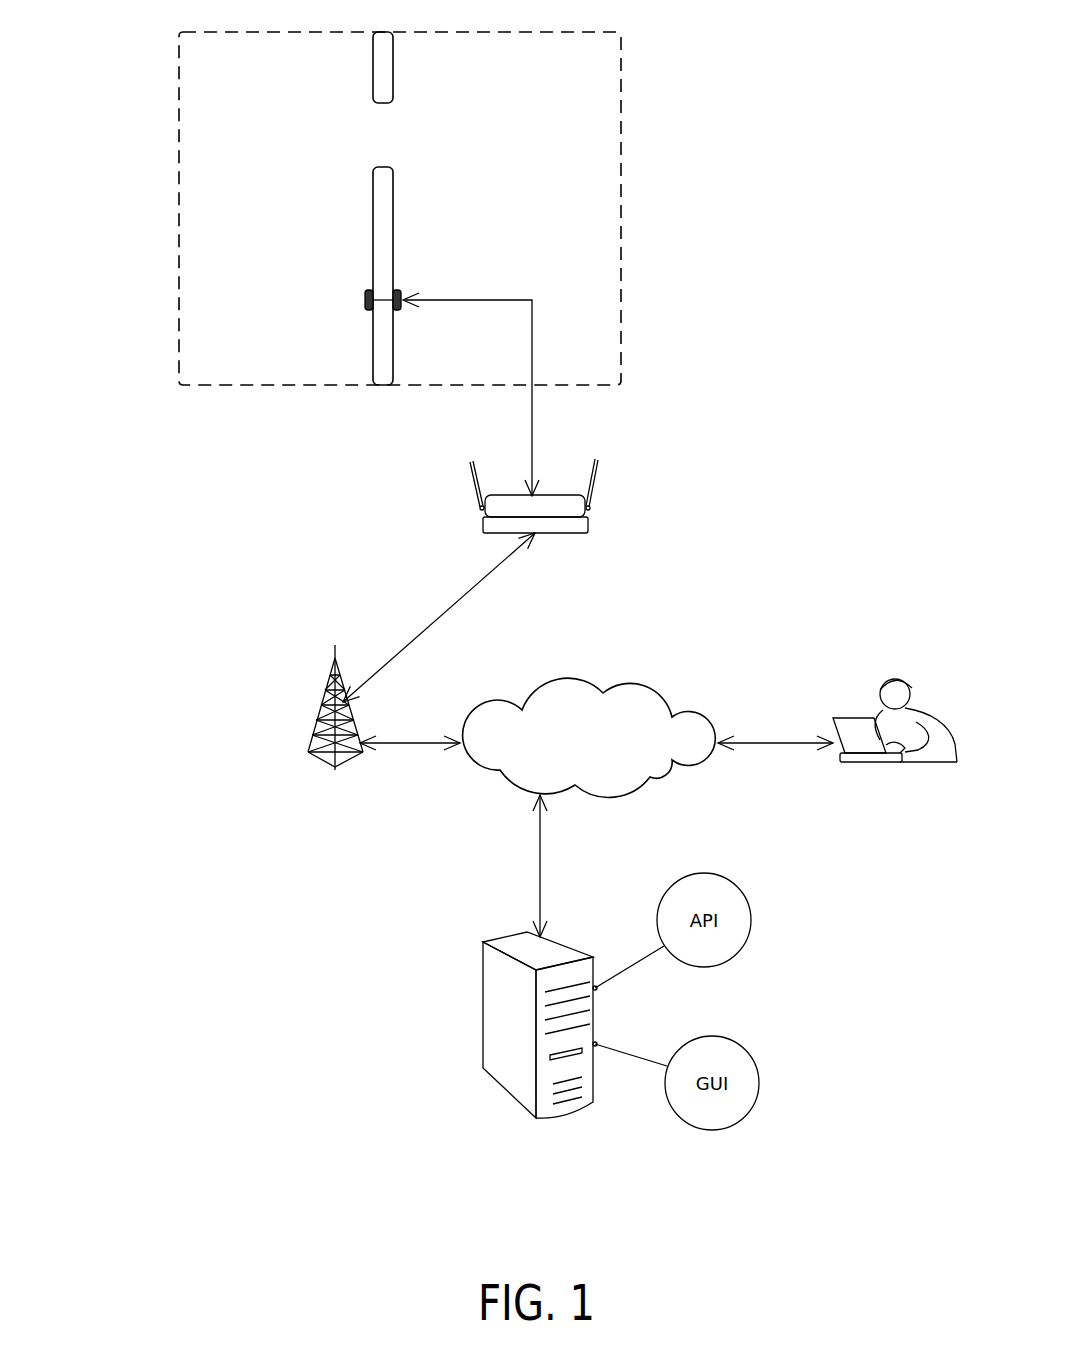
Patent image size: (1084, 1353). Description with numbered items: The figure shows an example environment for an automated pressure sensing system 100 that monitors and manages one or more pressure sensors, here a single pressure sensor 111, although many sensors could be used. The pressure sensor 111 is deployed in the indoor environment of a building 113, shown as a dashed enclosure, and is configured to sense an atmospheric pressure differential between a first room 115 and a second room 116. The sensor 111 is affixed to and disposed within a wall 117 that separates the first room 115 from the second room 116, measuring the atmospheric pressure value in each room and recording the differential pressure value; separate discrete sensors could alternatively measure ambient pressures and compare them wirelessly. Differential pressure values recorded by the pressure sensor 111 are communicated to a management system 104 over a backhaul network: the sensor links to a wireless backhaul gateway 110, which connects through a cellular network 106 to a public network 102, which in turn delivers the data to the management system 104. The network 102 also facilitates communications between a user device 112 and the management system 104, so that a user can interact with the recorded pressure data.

The automated pressure sensing system 100 is at (815, 36).
The public network 102 is at (589, 737).
The management system 104 is at (474, 1056).
The cellular network 106 is at (311, 719).
The wireless gateway 110 is at (475, 526).
The pressure sensor 111 is at (359, 318).
The user device 112 is at (901, 770).
The building 113 is at (170, 225).
The first room 115 is at (234, 84).
The second room 116 is at (567, 216).
The wall 117 is at (386, 402).